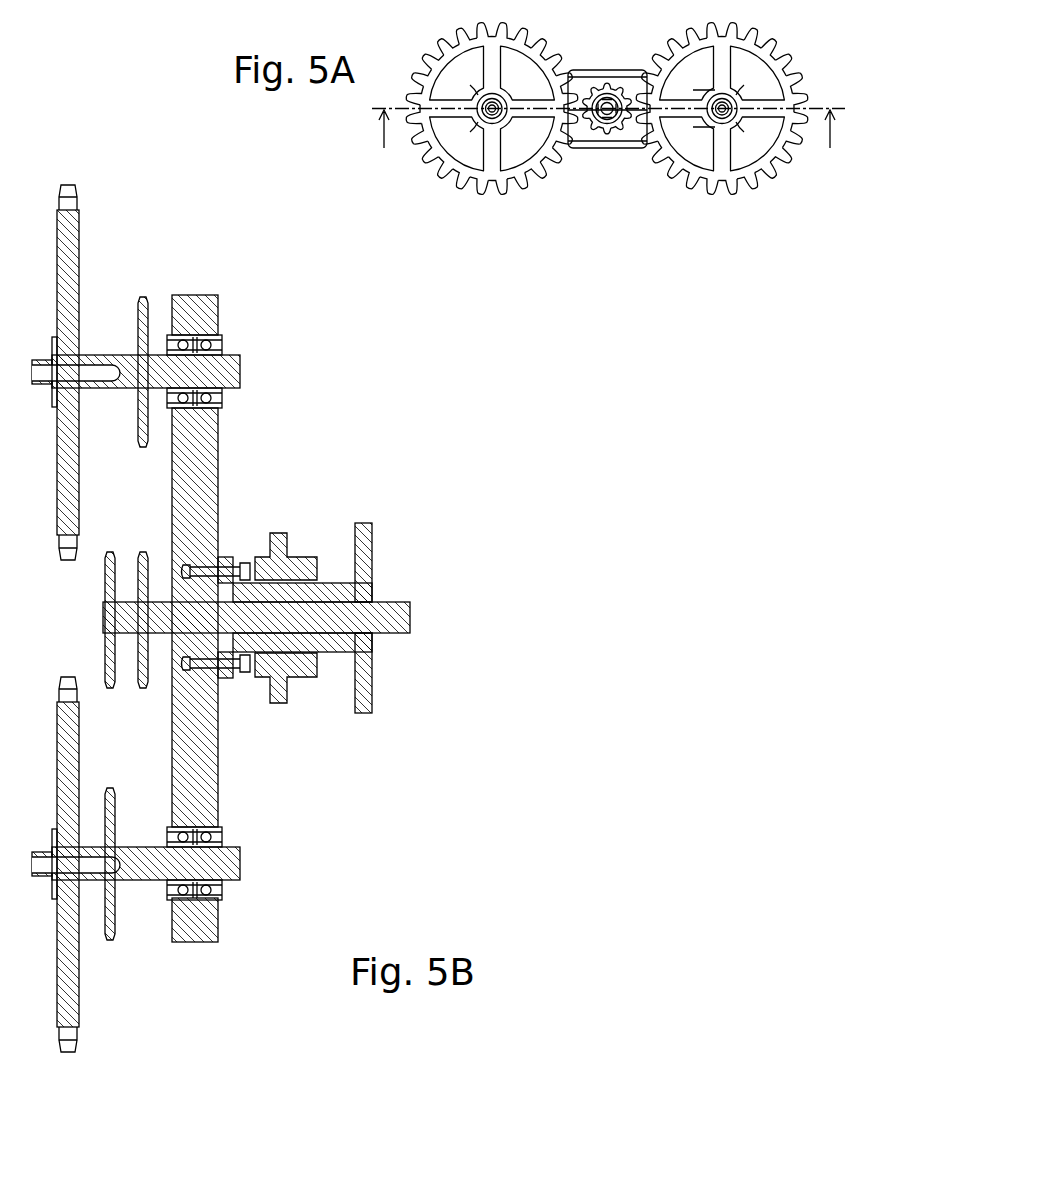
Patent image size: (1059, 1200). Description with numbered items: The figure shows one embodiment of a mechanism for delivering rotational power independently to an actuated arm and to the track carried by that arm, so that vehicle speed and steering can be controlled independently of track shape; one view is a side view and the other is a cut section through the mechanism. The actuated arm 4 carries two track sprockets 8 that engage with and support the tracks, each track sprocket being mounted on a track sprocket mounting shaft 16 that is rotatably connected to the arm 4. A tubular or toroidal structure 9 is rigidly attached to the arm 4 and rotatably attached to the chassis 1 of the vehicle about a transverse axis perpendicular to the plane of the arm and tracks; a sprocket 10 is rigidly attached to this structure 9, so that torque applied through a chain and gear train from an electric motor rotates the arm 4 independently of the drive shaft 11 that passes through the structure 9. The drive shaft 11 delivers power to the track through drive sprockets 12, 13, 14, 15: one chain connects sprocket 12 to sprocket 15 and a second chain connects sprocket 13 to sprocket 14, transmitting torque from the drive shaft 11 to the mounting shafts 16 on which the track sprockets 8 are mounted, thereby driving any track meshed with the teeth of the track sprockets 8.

In FIG. 5B, the chassis 1 is at (278, 687).
In FIG. 5A, the actuated arm 4 is at (672, 130).
In FIG. 5B, the actuated arm 4 is at (198, 703).
In FIG. 5A, the track sprockets 8 is at (488, 173).
In FIG. 5B, the track sprockets 8 is at (67, 232).
In FIG. 5B, the tubular or toroidal structure 9 is at (337, 592).
In FIG. 5B, the sprocket 10 is at (365, 548).
In FIG. 5B, the drive shaft 11 is at (397, 620).
In FIG. 5A, the drive sprocket 12 is at (600, 118).
In FIG. 5B, the drive sprocket 12 is at (110, 563).
In FIG. 5B, the drive sprocket 13 is at (140, 568).
In FIG. 5A, the drive sprocket 14 is at (740, 125).
In FIG. 5B, the drive sprocket 14 is at (145, 308).
In FIG. 5A, the drive sprocket 15 is at (510, 122).
In FIG. 5B, the drive sprocket 15 is at (105, 918).
In FIG. 5B, the track sprocket mounting shafts 16 is at (232, 373).